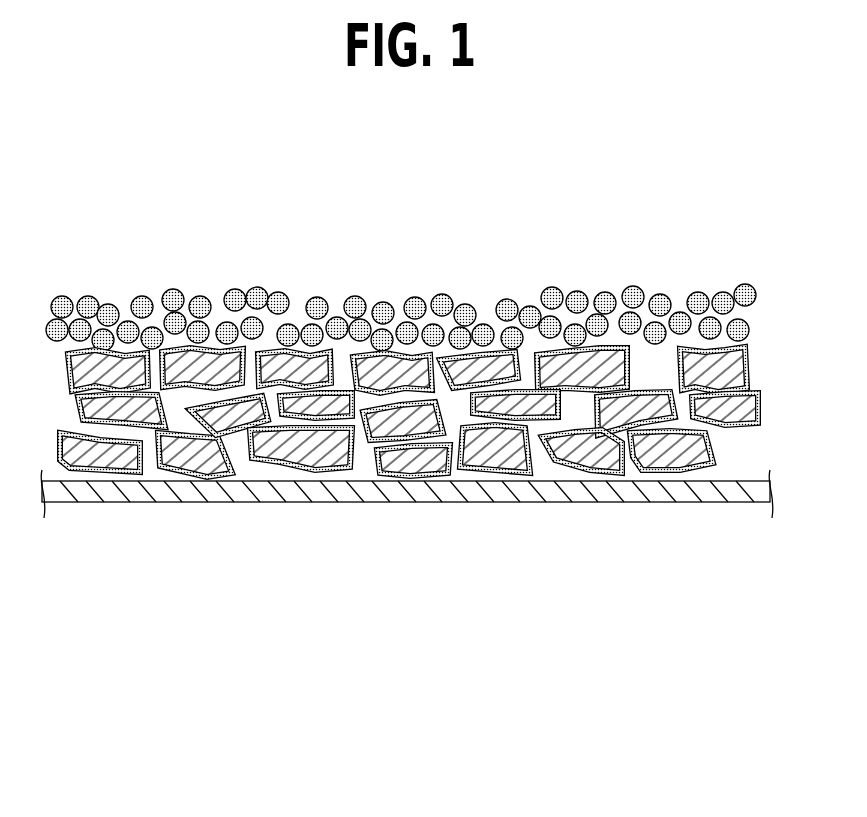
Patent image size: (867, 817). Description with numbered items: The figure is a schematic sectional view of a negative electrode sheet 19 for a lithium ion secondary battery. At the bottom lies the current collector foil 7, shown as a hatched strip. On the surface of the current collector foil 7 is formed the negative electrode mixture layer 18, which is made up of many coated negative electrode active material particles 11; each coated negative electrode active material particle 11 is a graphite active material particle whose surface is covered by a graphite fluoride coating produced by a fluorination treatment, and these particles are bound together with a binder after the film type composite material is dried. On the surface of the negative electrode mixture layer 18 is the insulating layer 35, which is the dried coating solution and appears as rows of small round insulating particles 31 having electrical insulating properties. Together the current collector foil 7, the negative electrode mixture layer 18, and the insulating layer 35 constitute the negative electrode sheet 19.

The current collector foil 7 is at (293, 492).
The coated negative electrode active material particle 11 is at (188, 378).
The negative electrode mixture layer 18 is at (762, 342).
The negative electrode sheet 19 is at (440, 278).
The insulating particle 31 is at (120, 330).
The insulating layer 35 is at (762, 283).